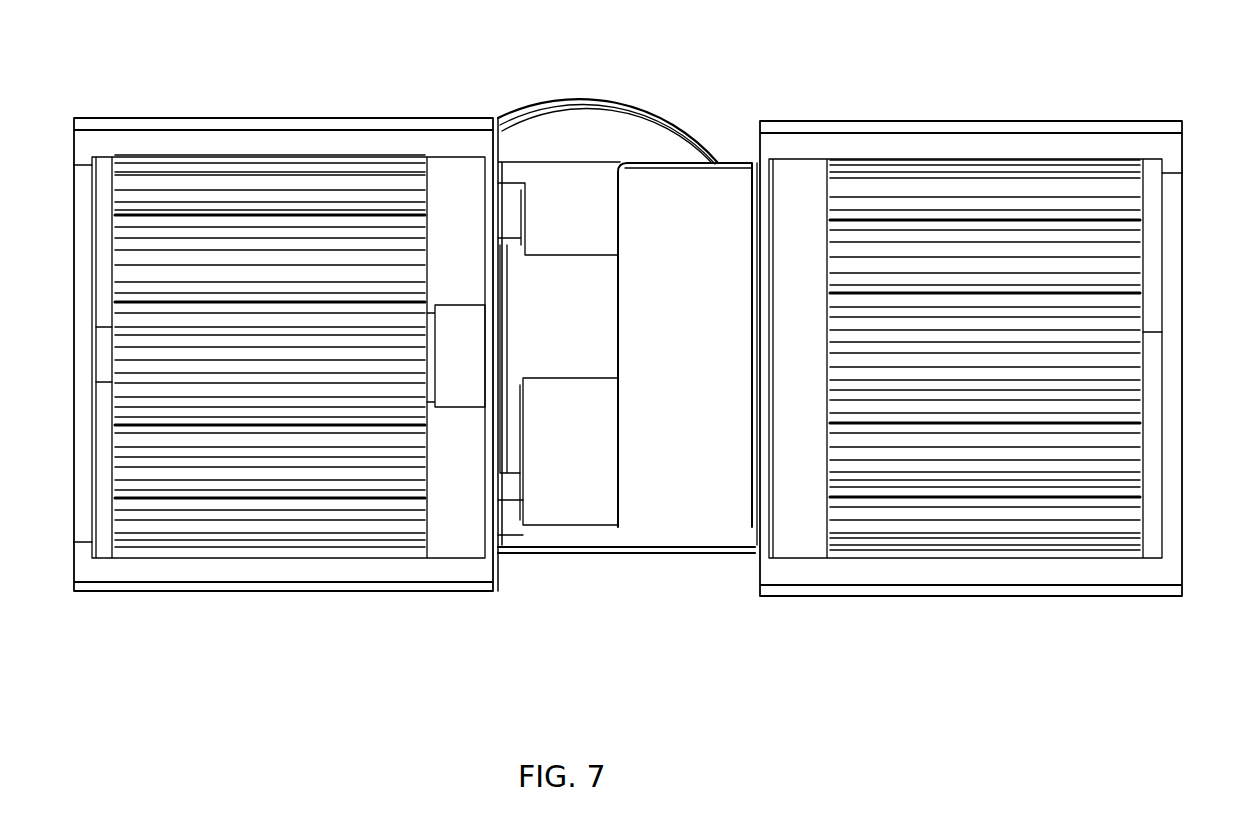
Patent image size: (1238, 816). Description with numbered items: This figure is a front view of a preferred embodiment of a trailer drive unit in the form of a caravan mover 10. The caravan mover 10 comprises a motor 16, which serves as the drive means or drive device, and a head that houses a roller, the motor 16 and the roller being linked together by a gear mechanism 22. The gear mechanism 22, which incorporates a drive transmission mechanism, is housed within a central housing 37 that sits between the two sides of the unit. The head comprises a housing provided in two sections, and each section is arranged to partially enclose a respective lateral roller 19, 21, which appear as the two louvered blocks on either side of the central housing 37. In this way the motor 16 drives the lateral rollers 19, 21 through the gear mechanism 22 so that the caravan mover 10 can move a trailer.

The caravan mover 10 is at (1060, 95).
The motor 16 is at (617, 130).
The lateral roller 19 is at (990, 532).
The lateral roller 21 is at (253, 465).
The gear mechanism 22 is at (692, 260).
The central housing 37 is at (675, 527).